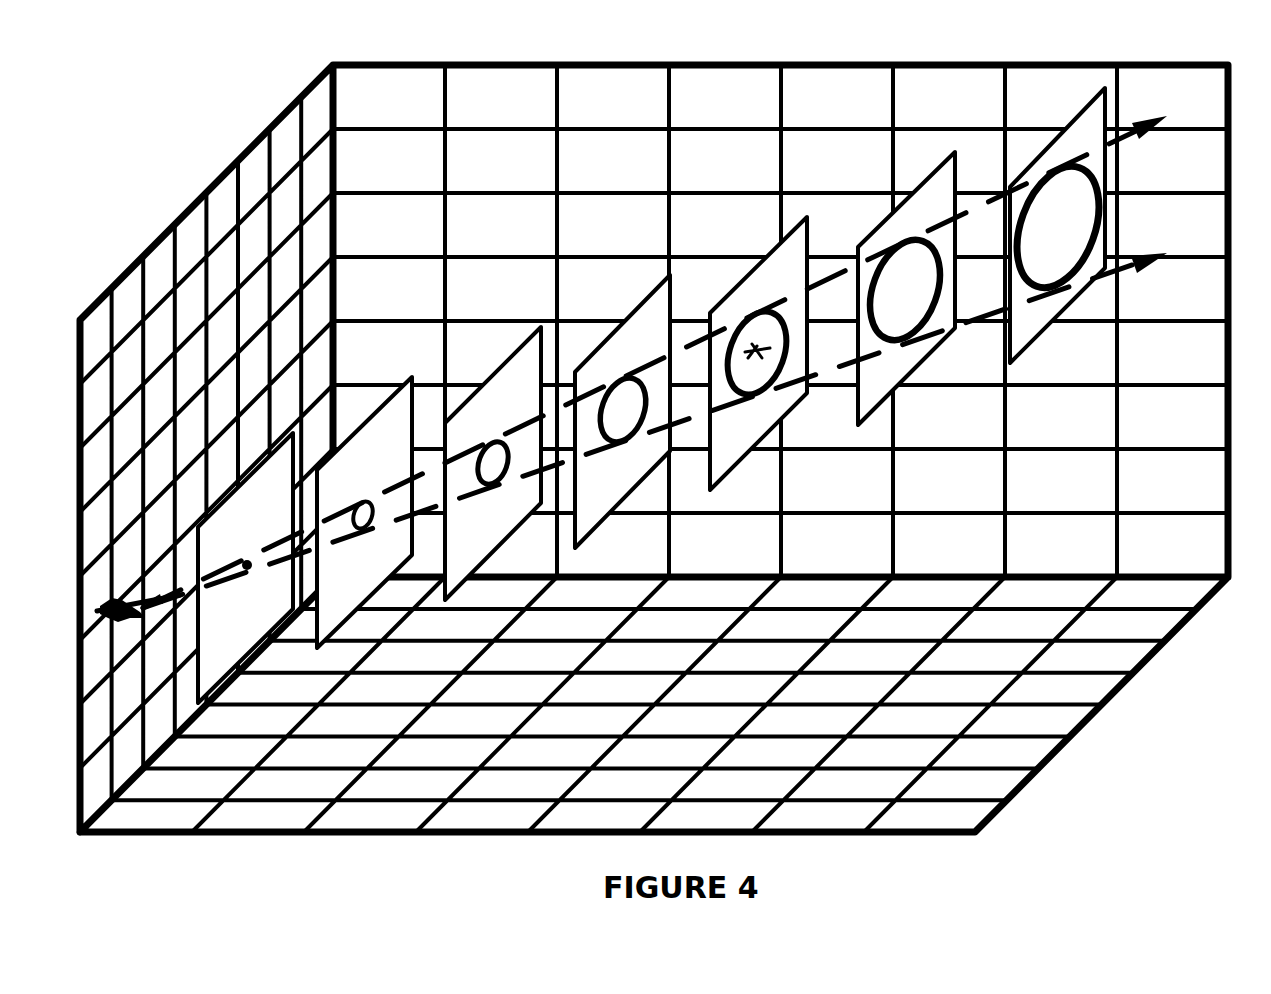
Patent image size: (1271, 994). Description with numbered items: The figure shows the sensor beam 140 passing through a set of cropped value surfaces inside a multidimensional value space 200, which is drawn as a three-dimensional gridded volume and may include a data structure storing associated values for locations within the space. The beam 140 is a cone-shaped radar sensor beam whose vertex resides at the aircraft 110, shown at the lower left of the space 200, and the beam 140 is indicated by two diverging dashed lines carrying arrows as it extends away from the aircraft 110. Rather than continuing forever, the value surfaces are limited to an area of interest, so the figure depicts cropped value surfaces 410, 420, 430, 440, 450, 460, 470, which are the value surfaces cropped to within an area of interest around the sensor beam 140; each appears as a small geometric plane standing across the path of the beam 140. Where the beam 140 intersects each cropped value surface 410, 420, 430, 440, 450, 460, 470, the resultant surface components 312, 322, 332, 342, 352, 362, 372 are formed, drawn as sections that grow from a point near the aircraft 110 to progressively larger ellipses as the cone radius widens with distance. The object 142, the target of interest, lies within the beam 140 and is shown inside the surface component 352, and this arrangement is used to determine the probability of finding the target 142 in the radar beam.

The multidimensional value space 200 is at (93, 330).
The aircraft 110 is at (118, 620).
The sensor beam 140 is at (975, 328).
The object 142 is at (735, 388).
The surface component 312 is at (246, 570).
The surface component 322 is at (367, 498).
The surface component 332 is at (496, 441).
The surface component 342 is at (632, 380).
The surface component 352 is at (771, 312).
The surface component 362 is at (922, 258).
The surface component 372 is at (1071, 178).
The cropped value surface 410 is at (250, 488).
The cropped value surface 420 is at (355, 455).
The cropped value surface 430 is at (470, 425).
The cropped value surface 440 is at (592, 368).
The cropped value surface 450 is at (720, 312).
The cropped value surface 460 is at (893, 225).
The cropped value surface 470 is at (1028, 182).